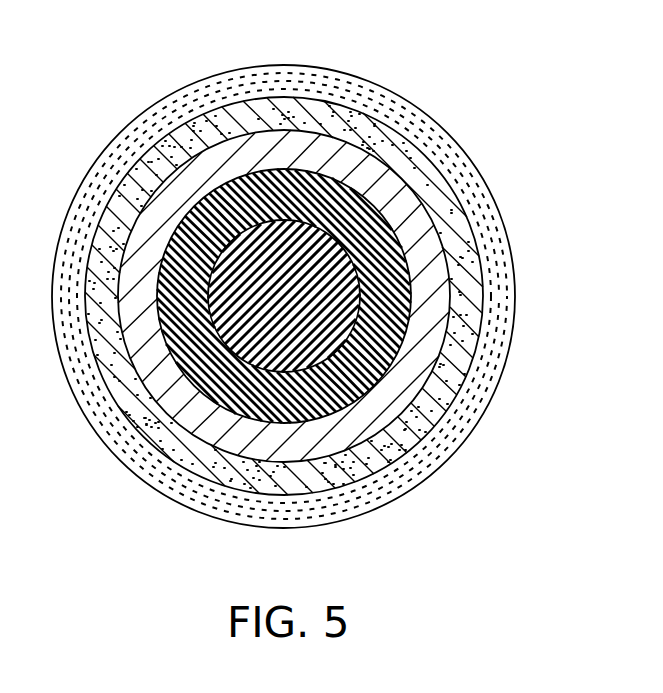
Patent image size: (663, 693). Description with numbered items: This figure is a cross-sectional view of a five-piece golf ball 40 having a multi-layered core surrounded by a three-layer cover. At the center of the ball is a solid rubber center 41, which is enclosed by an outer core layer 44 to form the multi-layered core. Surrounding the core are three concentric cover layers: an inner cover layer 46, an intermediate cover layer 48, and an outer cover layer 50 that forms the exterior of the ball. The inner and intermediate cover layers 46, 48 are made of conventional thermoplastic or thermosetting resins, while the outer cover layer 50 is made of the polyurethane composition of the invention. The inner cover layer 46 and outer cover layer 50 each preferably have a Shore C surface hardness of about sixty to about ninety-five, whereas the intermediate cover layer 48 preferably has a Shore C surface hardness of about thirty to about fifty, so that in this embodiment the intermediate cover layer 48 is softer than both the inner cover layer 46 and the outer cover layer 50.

The five-piece golf ball 40 is at (311, 268).
The solid rubber center 41 is at (340, 268).
The outer core layer 44 is at (377, 302).
The inner cover layer 46 is at (428, 340).
The intermediate cover layer 48 is at (458, 377).
The outer cover layer 50 is at (473, 413).